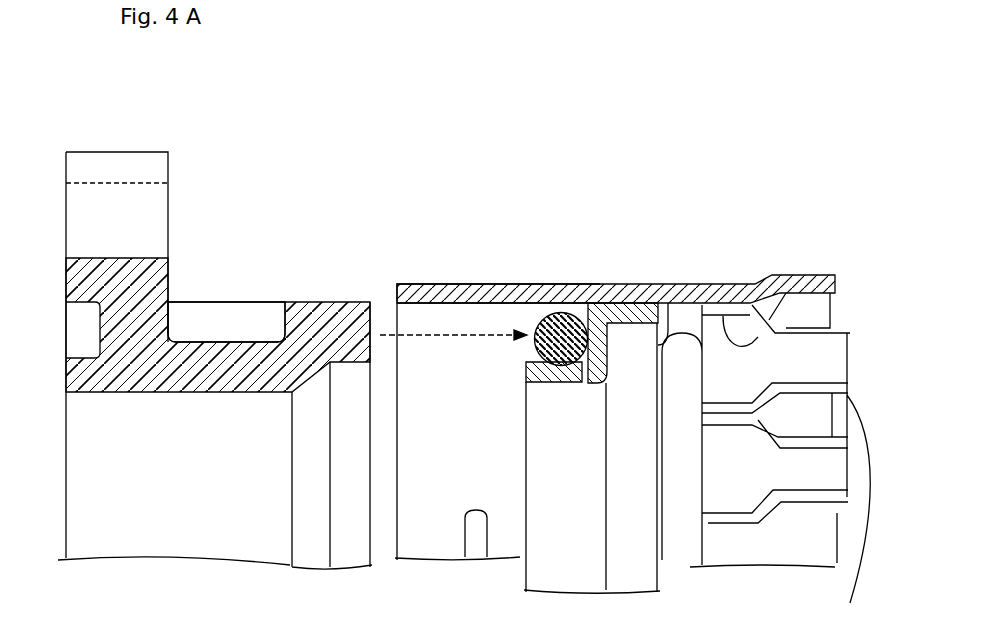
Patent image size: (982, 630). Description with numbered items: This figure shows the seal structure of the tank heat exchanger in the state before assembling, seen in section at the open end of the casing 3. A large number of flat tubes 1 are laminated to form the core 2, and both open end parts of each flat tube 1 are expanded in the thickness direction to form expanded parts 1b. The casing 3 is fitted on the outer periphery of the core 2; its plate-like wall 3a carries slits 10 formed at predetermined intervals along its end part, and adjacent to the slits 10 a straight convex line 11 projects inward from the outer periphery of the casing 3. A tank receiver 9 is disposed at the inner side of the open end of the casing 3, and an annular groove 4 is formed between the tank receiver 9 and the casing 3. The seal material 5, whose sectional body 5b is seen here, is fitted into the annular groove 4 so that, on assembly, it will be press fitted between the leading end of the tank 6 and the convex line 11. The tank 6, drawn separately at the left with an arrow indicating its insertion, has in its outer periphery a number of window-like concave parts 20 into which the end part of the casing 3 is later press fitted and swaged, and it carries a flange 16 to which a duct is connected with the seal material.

The flange 16 is at (66, 280).
The concave part 20 is at (230, 342).
The tank 6 is at (205, 335).
The slit 10 is at (473, 286).
The plate portion of cover 3a is at (717, 285).
The casing 3 is at (616, 249).
The seal material 5 is at (546, 292).
The O-ring portion of seal member 5b is at (537, 322).
The convex line 11 is at (572, 290).
The annular groove 4 is at (594, 384).
The tank receiver 9 is at (660, 323).
The expanded part 1b is at (790, 270).
The core 2 is at (847, 295).
The flat tube 1 is at (797, 503).